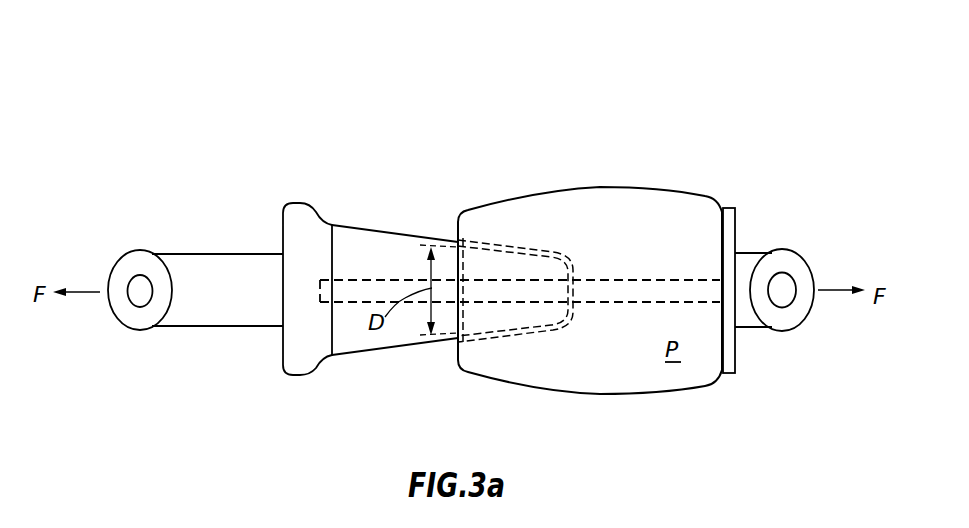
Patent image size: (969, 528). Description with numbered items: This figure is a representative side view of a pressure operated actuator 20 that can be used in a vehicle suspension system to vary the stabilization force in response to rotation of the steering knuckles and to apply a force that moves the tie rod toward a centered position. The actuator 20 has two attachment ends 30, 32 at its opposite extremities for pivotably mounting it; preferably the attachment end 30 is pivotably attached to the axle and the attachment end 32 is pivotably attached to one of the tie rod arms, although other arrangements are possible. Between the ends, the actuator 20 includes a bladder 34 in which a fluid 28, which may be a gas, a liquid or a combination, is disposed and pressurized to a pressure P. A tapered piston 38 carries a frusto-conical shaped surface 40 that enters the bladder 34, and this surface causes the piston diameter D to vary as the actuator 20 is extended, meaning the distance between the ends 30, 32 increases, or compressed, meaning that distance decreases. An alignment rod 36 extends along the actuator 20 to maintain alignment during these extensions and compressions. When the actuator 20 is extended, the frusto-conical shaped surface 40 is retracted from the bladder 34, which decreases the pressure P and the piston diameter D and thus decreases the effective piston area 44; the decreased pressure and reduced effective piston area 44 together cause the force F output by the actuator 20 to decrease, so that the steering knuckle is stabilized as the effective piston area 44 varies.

The pressure operated actuator 20 is at (436, 160).
The fluid 28 is at (693, 245).
The attachment end 30 is at (128, 250).
The attachment end 32 is at (785, 250).
The bladder 34 is at (680, 190).
The alignment rod 36 is at (613, 280).
The piston 38 is at (385, 255).
The frusto-conical shaped surface 40 is at (355, 228).
The effective piston area 44 is at (463, 265).